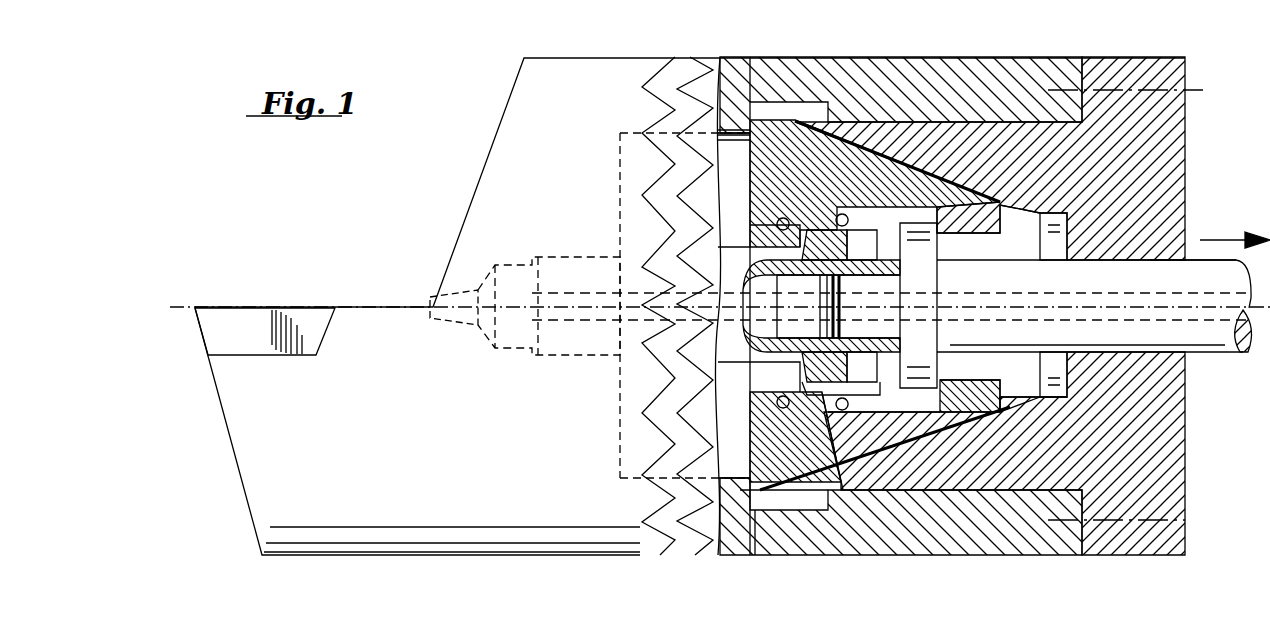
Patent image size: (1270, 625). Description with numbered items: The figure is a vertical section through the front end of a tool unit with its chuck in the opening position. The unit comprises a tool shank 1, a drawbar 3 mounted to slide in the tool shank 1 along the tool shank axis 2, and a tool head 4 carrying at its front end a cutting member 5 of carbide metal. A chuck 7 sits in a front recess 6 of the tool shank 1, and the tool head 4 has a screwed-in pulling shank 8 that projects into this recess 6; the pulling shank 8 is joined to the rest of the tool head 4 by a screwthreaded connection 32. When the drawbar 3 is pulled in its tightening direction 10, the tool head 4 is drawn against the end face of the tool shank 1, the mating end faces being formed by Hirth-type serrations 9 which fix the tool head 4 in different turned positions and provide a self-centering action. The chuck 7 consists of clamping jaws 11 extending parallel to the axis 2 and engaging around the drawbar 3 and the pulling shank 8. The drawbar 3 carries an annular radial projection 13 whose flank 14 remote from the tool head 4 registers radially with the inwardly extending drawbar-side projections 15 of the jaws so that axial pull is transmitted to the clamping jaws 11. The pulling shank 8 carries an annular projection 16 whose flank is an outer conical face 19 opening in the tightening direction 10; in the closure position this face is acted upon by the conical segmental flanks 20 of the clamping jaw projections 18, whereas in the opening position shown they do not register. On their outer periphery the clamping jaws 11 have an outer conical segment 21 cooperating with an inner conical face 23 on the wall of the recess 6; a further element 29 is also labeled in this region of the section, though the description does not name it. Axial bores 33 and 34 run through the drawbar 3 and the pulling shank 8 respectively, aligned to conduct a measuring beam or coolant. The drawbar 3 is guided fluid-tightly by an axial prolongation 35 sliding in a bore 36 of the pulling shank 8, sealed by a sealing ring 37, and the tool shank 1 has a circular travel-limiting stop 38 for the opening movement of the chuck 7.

The tool shank 1 is at (1136, 52).
The tool shank axis 2 is at (1264, 305).
The drawbar 3 is at (1197, 332).
The tool head 4 is at (568, 52).
The cutting member 5 is at (237, 318).
The front recess 6 is at (1030, 397).
The chuck 7 is at (800, 118).
The pulling shank 8 is at (640, 238).
The Hirth-type serrations 9 is at (697, 57).
The tightening direction 10 is at (1220, 238).
The clamping jaws 11 is at (757, 80).
The radial projection 13 is at (960, 246).
The flank 14 is at (958, 413).
The drawbar-side projections 15 is at (1005, 215).
The projection 16 is at (808, 220).
The clamping jaw projections 18 is at (760, 214).
The outer conical face 19 is at (793, 404).
The conical segmental flanks 20 is at (786, 212).
The outer conical segment 21 is at (873, 150).
The inner conical face 23 is at (925, 175).
The housing part 29 is at (933, 412).
The screwthreaded connection 32 is at (570, 352).
The axially extending bore 33 is at (1218, 345).
The axially extending bore 34 is at (434, 300).
The axial prolongation 35 is at (885, 355).
The bore 36 is at (803, 313).
The sealing ring 37 is at (880, 282).
The travel-limiting stop 38 is at (744, 520).